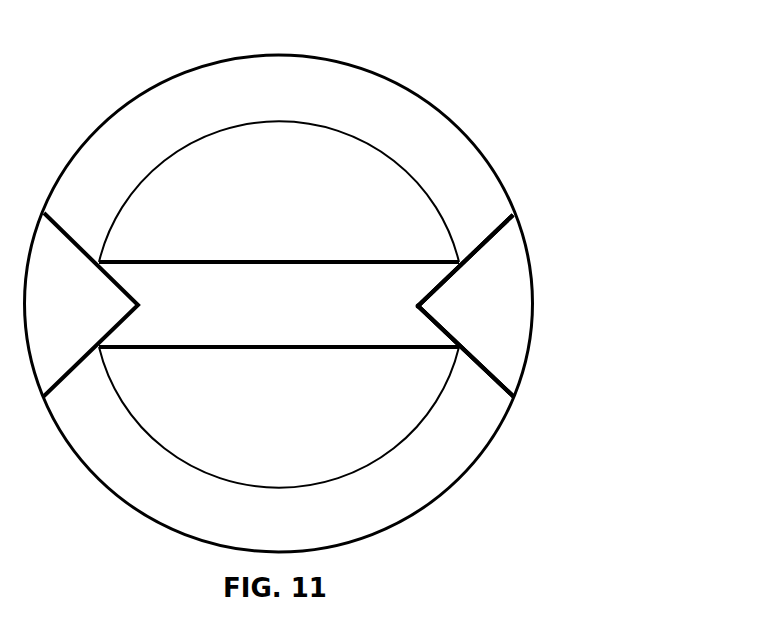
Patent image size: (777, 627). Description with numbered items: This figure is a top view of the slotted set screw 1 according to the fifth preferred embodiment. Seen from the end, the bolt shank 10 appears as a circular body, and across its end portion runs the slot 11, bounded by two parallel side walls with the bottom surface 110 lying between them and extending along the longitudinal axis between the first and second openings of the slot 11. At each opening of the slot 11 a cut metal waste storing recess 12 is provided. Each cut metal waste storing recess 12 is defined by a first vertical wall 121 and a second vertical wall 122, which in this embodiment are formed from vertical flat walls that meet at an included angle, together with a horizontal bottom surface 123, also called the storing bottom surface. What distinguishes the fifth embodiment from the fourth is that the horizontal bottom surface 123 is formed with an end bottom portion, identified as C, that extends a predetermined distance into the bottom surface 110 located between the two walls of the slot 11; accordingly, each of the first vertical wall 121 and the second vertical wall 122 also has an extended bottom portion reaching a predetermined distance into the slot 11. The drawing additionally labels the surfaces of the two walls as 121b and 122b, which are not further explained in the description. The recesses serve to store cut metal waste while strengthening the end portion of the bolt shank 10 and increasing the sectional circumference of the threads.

The slotted set screw 1 is at (334, 286).
The bolt shank 10 is at (370, 98).
The slot 11 is at (279, 304).
The bottom surface 110 is at (203, 279).
The cut metal waste storing recess 12 is at (522, 288).
The first vertical wall 121 is at (497, 384).
The inner surface of lower arm 121b is at (506, 374).
The second vertical wall 122 is at (509, 228).
The inner surface of upper arm 122b is at (511, 232).
The horizontal bottom surface 123 is at (498, 311).
The end bottom portion C is at (438, 312).